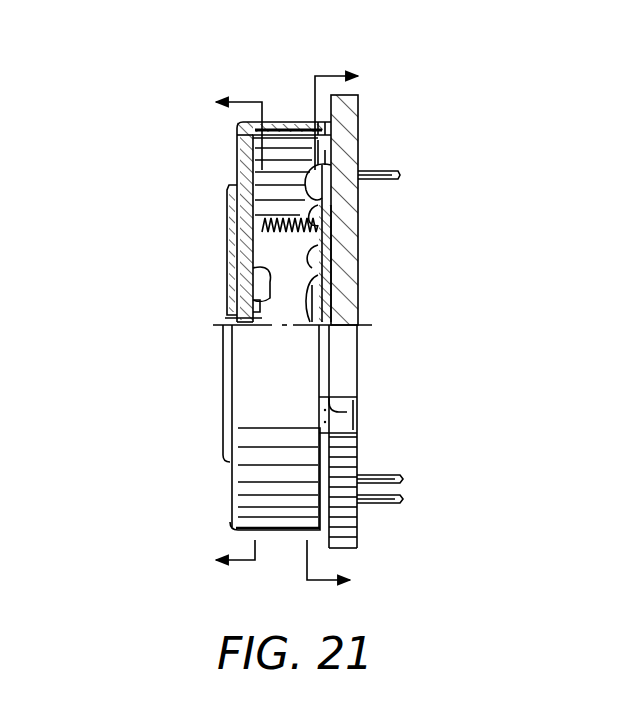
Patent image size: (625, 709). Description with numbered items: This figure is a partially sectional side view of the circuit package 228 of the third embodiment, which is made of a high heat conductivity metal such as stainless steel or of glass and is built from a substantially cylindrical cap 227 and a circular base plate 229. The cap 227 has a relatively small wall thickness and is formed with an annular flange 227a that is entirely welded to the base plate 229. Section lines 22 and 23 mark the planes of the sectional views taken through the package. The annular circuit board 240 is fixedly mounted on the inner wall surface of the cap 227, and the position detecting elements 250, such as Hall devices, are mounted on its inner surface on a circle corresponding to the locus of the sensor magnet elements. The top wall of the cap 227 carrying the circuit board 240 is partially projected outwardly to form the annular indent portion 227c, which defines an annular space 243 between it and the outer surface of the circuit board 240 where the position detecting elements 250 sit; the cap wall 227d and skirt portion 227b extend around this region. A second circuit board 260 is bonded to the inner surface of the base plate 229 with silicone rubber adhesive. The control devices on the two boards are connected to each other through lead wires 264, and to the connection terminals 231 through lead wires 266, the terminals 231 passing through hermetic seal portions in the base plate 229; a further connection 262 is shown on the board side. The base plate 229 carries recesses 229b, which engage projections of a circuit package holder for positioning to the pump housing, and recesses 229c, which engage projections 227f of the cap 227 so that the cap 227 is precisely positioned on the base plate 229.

The section line 22- 22 is at (354, 329).
The section line 23- 23 is at (215, 332).
The cap 227 is at (278, 122).
The annular flange 227a is at (318, 122).
The cap skirt wall 227b is at (262, 327).
The annular indent portion 227c is at (237, 237).
The cap hatched wall 227d is at (234, 124).
The cap notch 227f is at (340, 421).
The circuit package 228 is at (218, 505).
The base plate 229 is at (357, 123).
The recesses 229b is at (357, 515).
The recesses 229c is at (355, 405).
The connection terminals 231 is at (397, 177).
The annular circuit board 240 is at (253, 294).
The annular space 243 is at (229, 199).
The position detecting elements 250 is at (262, 265).
The circuit board 260 is at (328, 213).
The lower contact portion 262 is at (330, 293).
The lead wires 264 is at (328, 267).
The lead wires 266 is at (322, 171).